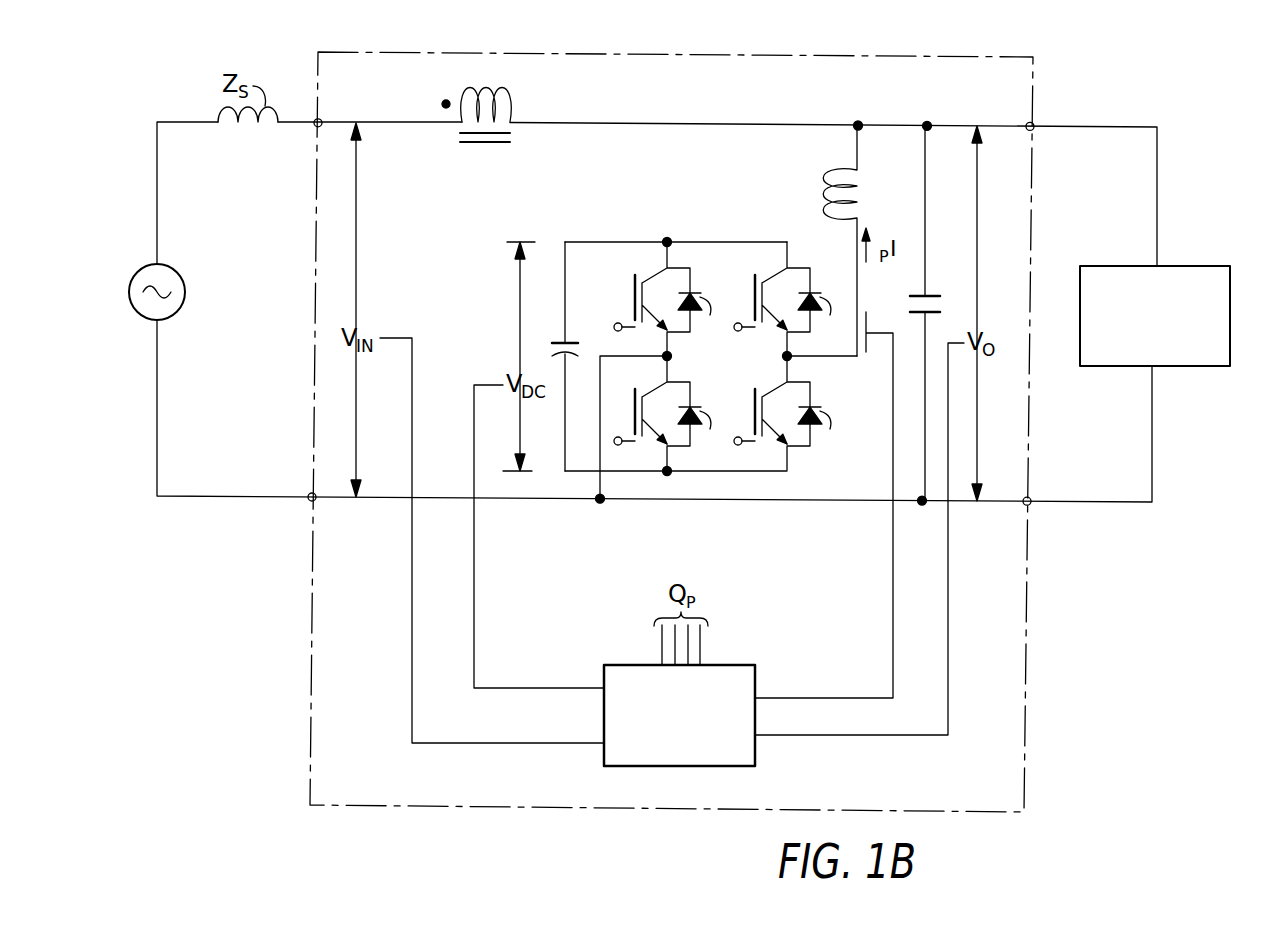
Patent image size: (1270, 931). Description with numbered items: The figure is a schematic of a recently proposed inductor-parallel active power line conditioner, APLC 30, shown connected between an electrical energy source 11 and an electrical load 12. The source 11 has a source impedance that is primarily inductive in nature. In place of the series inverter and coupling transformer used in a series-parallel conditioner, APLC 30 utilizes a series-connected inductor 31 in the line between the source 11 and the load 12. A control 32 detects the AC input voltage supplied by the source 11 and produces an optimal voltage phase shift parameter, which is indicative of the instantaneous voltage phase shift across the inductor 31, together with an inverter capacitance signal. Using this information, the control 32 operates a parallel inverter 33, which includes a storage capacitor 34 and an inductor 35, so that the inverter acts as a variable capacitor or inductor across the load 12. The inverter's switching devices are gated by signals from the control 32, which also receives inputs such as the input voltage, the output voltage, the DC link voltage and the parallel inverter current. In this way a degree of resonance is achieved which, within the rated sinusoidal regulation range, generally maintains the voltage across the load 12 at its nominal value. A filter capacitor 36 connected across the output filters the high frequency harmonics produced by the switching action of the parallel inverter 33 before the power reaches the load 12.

The electrical energy source 11 is at (186, 289).
The electrical load 12 is at (1205, 266).
The APLC 30 is at (381, 50).
The series-connected inductor 31 is at (500, 95).
The control 32 is at (755, 760).
The parallel inverter 33 is at (740, 373).
The storage capacitor 34 is at (557, 346).
The inductor 35 is at (827, 192).
The filter capacitor 36 is at (936, 305).